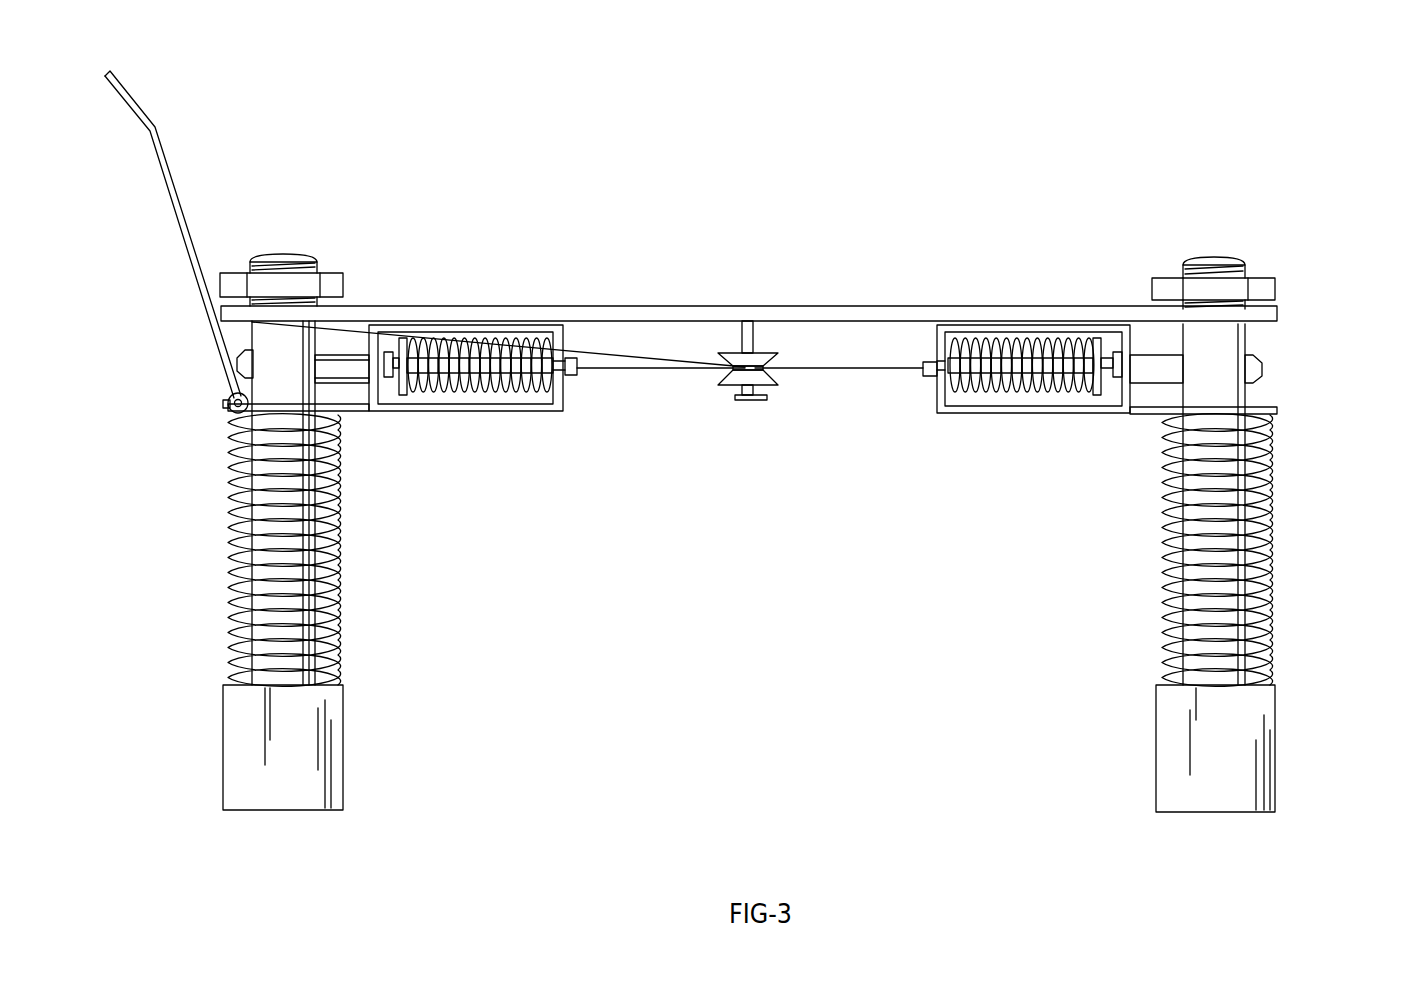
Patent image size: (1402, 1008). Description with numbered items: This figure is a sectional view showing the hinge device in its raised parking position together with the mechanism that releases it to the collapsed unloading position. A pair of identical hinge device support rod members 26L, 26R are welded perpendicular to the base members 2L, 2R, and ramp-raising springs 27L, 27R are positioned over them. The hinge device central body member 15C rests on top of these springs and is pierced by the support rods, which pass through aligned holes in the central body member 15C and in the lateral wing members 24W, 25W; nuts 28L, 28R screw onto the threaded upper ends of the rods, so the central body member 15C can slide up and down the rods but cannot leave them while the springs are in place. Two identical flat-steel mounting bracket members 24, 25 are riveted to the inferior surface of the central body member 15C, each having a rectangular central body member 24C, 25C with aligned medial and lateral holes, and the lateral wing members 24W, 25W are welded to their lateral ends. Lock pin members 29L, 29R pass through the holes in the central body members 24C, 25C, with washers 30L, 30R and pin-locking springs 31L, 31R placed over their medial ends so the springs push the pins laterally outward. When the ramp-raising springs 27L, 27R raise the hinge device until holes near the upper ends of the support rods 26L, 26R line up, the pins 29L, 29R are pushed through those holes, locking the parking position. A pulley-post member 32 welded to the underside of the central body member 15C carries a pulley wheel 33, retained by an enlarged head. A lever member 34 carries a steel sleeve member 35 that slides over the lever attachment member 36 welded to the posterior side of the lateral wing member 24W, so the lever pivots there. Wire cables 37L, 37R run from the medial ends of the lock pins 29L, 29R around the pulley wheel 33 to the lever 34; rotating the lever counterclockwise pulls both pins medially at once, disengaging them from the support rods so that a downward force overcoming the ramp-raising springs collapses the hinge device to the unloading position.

The base member 2L is at (343, 748).
The base member 2R is at (1156, 752).
The hinge device central body member 15C is at (590, 305).
The mounting bracket member 24 is at (560, 420).
The central body member 24C is at (517, 412).
The lateral wing member 24W is at (348, 413).
The mounting bracket member 25 is at (944, 420).
The central body member 25C is at (1053, 413).
The lateral wing member 25W is at (1147, 418).
The hinge device support rod member 26L is at (292, 253).
The hinge device support rod member 26R is at (1228, 255).
The ramp-raising spring 27L is at (232, 548).
The ramp-raising spring 27R is at (1268, 553).
The nut 28L is at (345, 285).
The nut 28R is at (1278, 288).
The lock pin member 29L is at (349, 358).
The lock pin member 29R is at (1263, 365).
The washer 30L is at (403, 398).
The washer 30R is at (1096, 397).
The pin-locking spring 31L is at (450, 392).
The pin-locking spring 31R is at (1000, 392).
The pulley-post member 32 is at (740, 333).
The pulley wheel 33 is at (730, 385).
The lever member 34 is at (172, 168).
The steel sleeve member 35 is at (230, 398).
The lever attachment member 36 is at (232, 412).
The wire cable 37L is at (597, 371).
The wire cable 37R is at (868, 370).